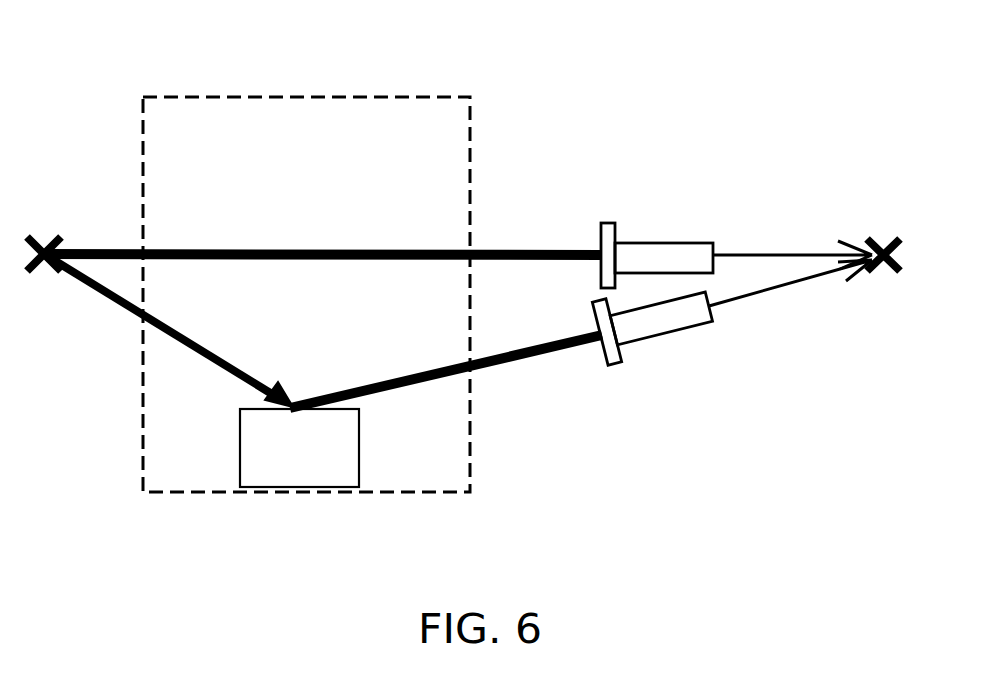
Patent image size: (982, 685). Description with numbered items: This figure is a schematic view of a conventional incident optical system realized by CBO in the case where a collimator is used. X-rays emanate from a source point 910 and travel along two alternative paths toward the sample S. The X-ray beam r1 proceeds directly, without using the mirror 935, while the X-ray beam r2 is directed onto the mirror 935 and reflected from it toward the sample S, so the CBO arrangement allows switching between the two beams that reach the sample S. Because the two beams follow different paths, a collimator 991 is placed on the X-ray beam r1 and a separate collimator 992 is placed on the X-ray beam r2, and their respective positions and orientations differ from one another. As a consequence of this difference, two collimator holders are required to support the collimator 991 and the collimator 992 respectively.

The light source point 910 is at (44, 240).
The mirror 935 is at (241, 448).
The collimator 991 is at (650, 242).
The collimator 992 is at (656, 336).
The element CBO is at (423, 96).
The X-ray beam r1 is at (536, 249).
The X-ray beam r2 is at (536, 352).
The sample S is at (877, 238).